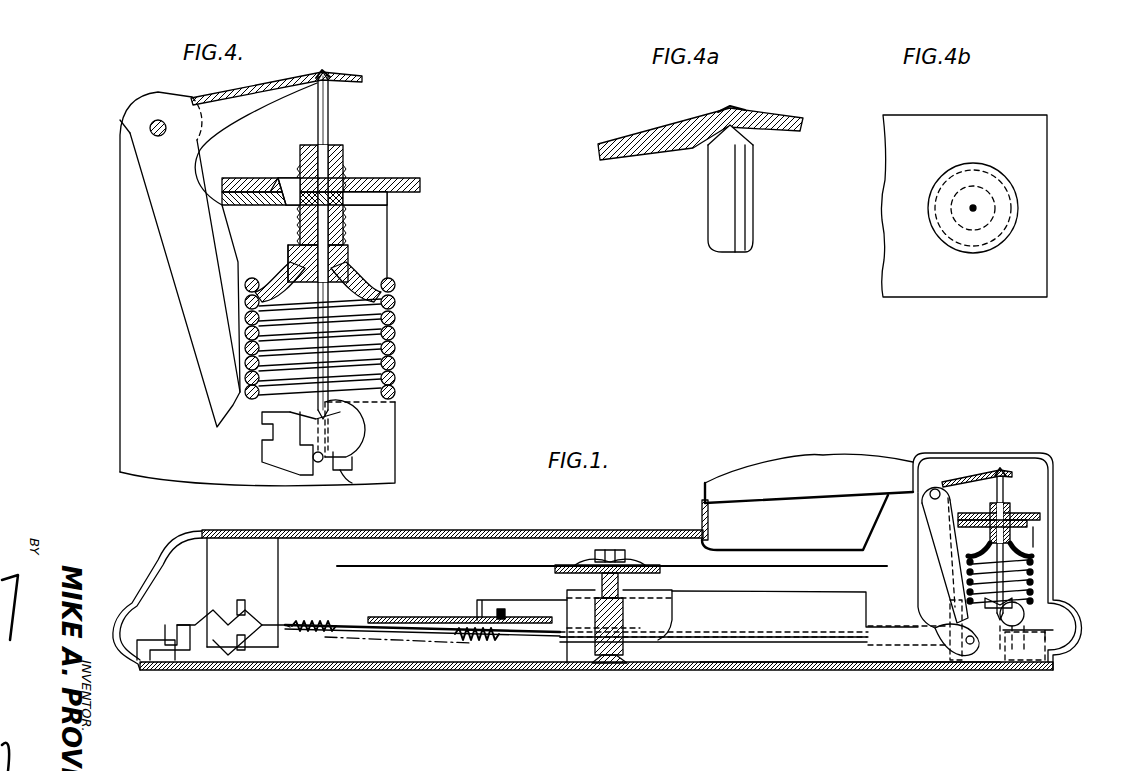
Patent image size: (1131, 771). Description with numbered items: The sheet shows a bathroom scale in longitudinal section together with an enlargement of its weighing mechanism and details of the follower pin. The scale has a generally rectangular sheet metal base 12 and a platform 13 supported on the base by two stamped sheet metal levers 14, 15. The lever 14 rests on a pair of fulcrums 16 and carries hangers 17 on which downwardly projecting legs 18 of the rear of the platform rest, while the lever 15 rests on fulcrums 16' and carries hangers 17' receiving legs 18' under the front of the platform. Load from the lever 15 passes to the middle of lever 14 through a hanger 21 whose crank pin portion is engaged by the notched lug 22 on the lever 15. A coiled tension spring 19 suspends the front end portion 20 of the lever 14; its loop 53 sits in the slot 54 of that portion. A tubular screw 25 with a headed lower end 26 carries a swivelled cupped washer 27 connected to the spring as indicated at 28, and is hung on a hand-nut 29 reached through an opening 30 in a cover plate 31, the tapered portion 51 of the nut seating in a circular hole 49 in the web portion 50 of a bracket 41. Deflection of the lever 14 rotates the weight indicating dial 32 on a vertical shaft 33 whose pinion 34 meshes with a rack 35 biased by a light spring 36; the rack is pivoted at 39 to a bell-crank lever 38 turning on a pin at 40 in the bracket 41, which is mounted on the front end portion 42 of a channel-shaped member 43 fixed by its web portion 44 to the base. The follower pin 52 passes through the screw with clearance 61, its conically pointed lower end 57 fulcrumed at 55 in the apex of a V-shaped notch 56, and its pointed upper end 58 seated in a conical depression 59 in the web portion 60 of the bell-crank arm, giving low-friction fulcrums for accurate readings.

In FIG. 1, the base 12 is at (328, 668).
In FIG. 1, the platform 13 is at (392, 531).
In FIG. 4, the lever 14 is at (342, 472).
In FIG. 1, the lever 14 is at (348, 627).
In FIG. 1, the lever 15 is at (527, 603).
In FIG. 1, the fulcrums 16 is at (163, 633).
In FIG. 1, the hangers 17 is at (242, 618).
In FIG. 1, the legs 18 is at (255, 592).
In FIG. 4, the coiled tension spring 19 is at (396, 333).
In FIG. 1, the coiled tension spring 19 is at (1035, 575).
In FIG. 4, the front end portion 20 is at (362, 436).
In FIG. 1, the front end portion 20 is at (1024, 616).
In FIG. 1, the hanger 21 is at (505, 614).
In FIG. 1, the lug 22 is at (490, 603).
In FIG. 4, the tubular screw 25 is at (344, 170).
In FIG. 1, the tubular screw 25 is at (1008, 506).
In FIG. 4, the headed lower end 26 is at (302, 283).
In FIG. 4, the cupped washer 27 is at (362, 270).
In FIG. 1, the cupped washer 27 is at (1030, 548).
In FIG. 4, the connection 28 is at (397, 302).
In FIG. 4, the hand-nut 29 is at (390, 183).
In FIG. 1, the hand-nut 29 is at (1040, 516).
In FIG. 1, the opening 30 is at (1053, 480).
In FIG. 1, the cover plate 31 is at (990, 455).
In FIG. 1, the weight indicating dial 32 is at (445, 565).
In FIG. 1, the vertical shaft 33 is at (625, 582).
In FIG. 1, the pinion 34 is at (622, 618).
In FIG. 1, the rack 35 is at (660, 637).
In FIG. 1, the coiled tension spring 36 is at (470, 642).
In FIG. 4, the bell-crank lever 38 is at (197, 328).
In FIG. 1, the bell-crank lever 38 is at (950, 575).
In FIG. 1, the pivotal connection 39 is at (975, 645).
In FIG. 4, the pivot 40 is at (150, 128).
In FIG. 1, the pivot 40 is at (938, 491).
In FIG. 4, the bracket 41 is at (126, 176).
In FIG. 1, the bracket 41 is at (922, 512).
In FIG. 4, the front end portion 42 is at (128, 297).
In FIG. 1, the front end portion 42 is at (918, 562).
In FIG. 1, the channel-shaped member 43 is at (770, 628).
In FIG. 1, the web portion 44 is at (748, 663).
In FIG. 4, the circular hole 49 is at (358, 206).
In FIG. 4, the web portion 50 is at (390, 197).
In FIG. 4, the tapered portion 51 is at (292, 208).
In FIG. 4, the follower pin 52 is at (331, 128).
In FIG. 4A, the follower pin 52 is at (740, 212).
In FIG. 4B, the follower pin 52 is at (953, 225).
In FIG. 1, the follower pin 52 is at (1005, 490).
In FIG. 4, the loop 53 is at (313, 458).
In FIG. 4, the slot 54 is at (340, 463).
In FIG. 4, the fulcrum 55 is at (298, 430).
In FIG. 1, the fulcrum 55 is at (1015, 600).
In FIG. 4, the V-shaped notch 56 is at (343, 417).
In FIG. 4, the conically pointed lower end 57 is at (314, 417).
In FIG. 4, the upper end 58 is at (318, 84).
In FIG. 4A, the upper end 58 is at (733, 140).
In FIG. 4B, the upper end 58 is at (975, 208).
In FIG. 4, the conical depression 59 is at (328, 74).
In FIG. 4A, the conical depression 59 is at (757, 118).
In FIG. 4B, the conical depression 59 is at (960, 196).
In FIG. 1, the conical depression 59 is at (1003, 477).
In FIG. 4, the web portion 60 is at (358, 80).
In FIG. 4A, the web portion 60 is at (785, 133).
In FIG. 4B, the web portion 60 is at (910, 296).
In FIG. 1, the web portion 60 is at (977, 478).
In FIG. 4, the clearance 61 is at (368, 136).
In FIG. 1, the fulcrums 16' is at (1030, 662).
In FIG. 1, the hangers 17' is at (948, 647).
In FIG. 1, the legs 18' is at (905, 660).